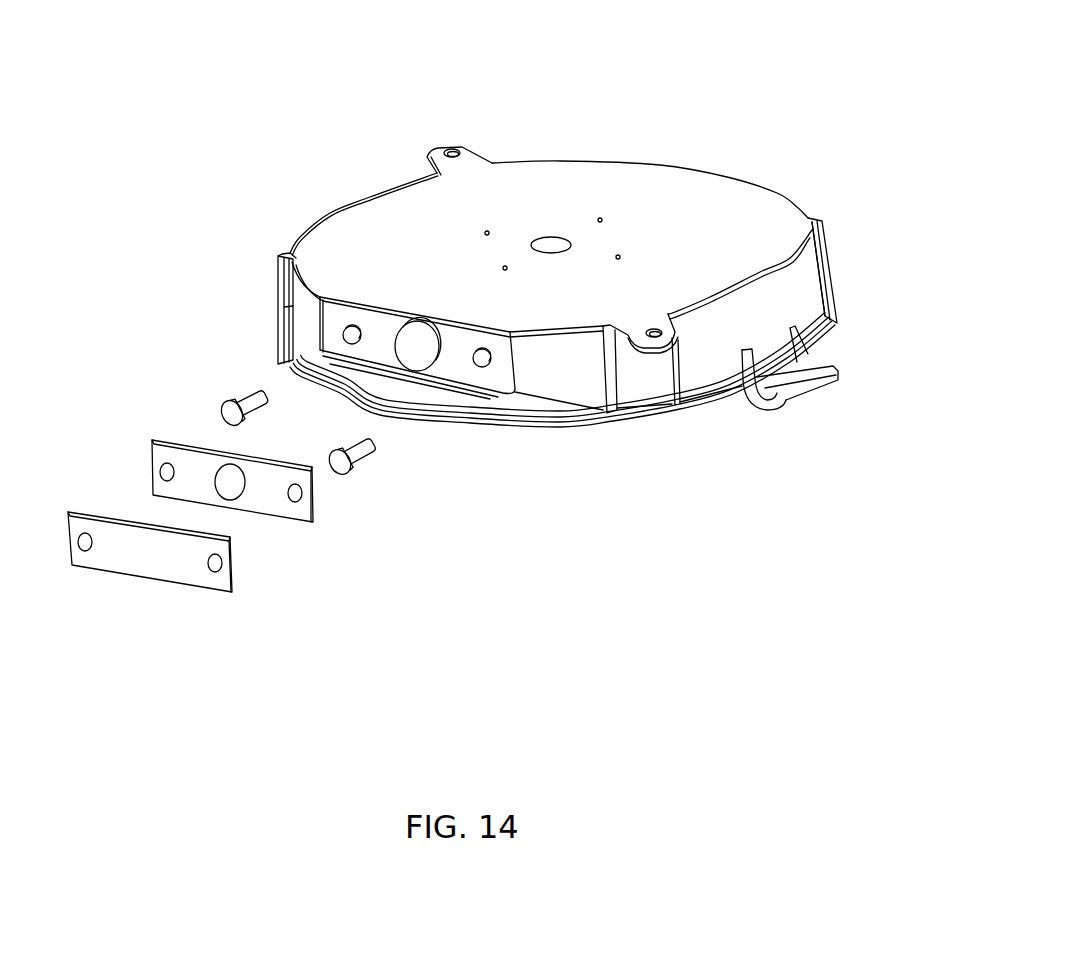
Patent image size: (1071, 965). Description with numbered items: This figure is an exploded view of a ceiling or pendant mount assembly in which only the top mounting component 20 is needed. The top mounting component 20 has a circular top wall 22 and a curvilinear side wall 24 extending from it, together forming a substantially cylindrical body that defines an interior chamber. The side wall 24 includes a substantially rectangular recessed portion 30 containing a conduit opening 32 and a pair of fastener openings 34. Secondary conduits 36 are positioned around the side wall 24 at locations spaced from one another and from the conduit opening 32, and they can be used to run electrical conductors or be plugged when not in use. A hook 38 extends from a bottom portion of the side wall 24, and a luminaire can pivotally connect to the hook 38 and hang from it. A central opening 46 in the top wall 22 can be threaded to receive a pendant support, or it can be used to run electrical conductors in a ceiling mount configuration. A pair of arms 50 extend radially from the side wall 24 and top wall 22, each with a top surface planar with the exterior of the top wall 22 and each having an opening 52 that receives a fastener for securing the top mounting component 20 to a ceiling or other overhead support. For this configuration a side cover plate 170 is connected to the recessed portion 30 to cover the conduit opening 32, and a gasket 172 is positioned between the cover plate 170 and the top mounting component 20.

The top mounting component 20 is at (706, 95).
The top wall 22 is at (765, 203).
The side wall 24 is at (802, 293).
The recessed portion 30 is at (463, 372).
The conduit opening 32 is at (422, 358).
The fastener openings 34 is at (482, 350).
The secondary conduits 36 is at (278, 297).
The hook 38 is at (836, 378).
The central opening 46 is at (556, 224).
The arms 50 is at (433, 157).
The opening 52 is at (456, 152).
The side cover plate 170 is at (103, 522).
The gasket 172 is at (168, 447).